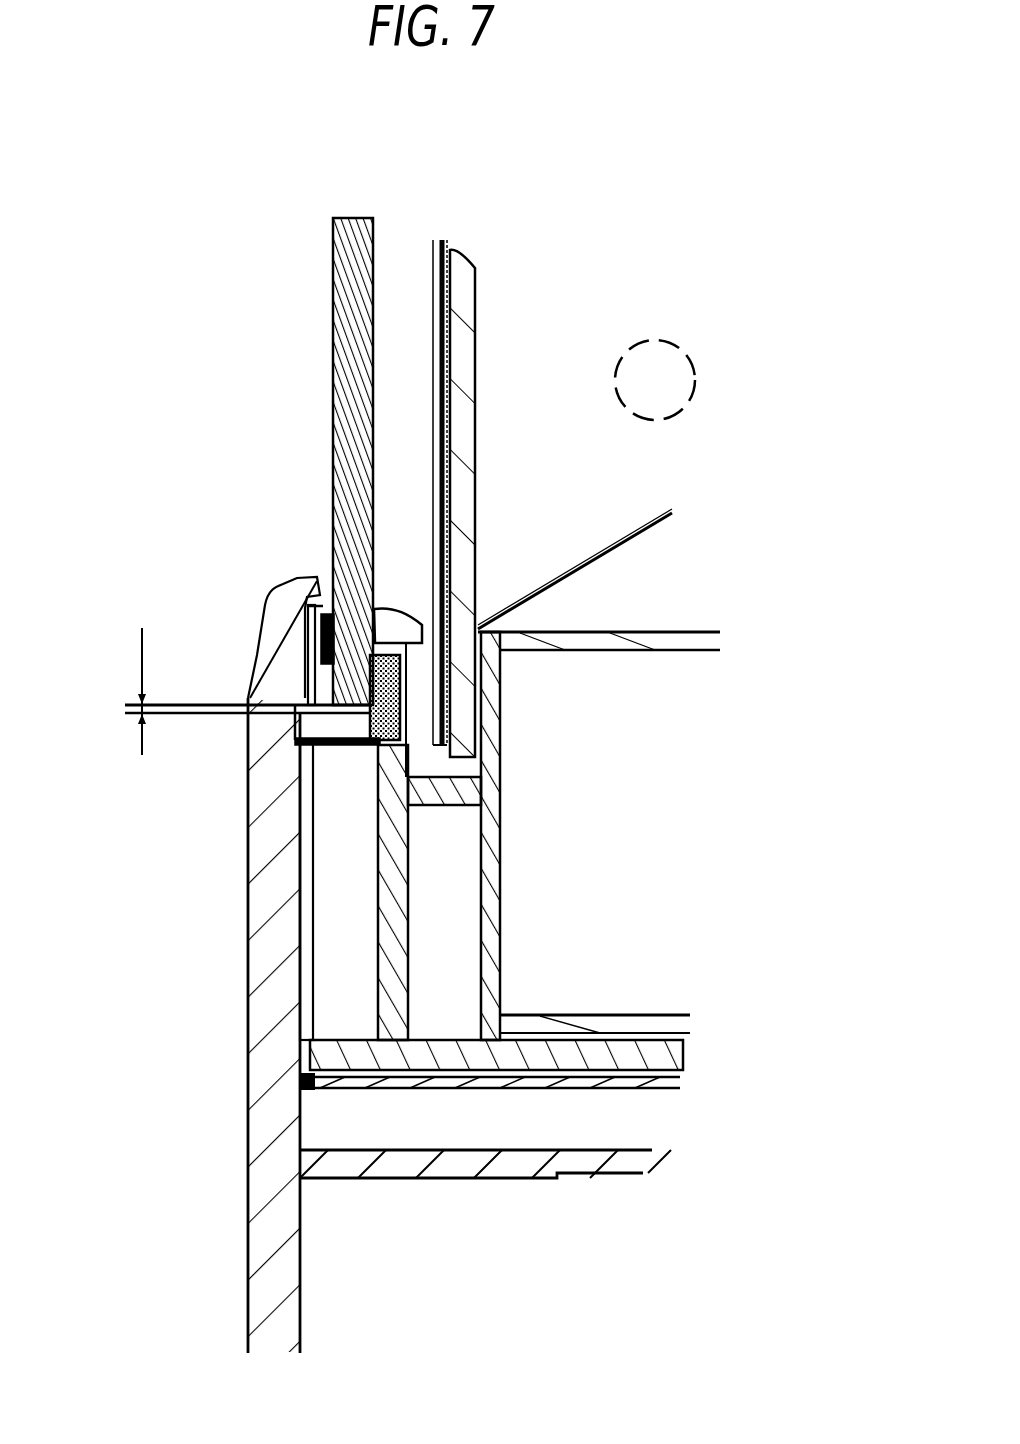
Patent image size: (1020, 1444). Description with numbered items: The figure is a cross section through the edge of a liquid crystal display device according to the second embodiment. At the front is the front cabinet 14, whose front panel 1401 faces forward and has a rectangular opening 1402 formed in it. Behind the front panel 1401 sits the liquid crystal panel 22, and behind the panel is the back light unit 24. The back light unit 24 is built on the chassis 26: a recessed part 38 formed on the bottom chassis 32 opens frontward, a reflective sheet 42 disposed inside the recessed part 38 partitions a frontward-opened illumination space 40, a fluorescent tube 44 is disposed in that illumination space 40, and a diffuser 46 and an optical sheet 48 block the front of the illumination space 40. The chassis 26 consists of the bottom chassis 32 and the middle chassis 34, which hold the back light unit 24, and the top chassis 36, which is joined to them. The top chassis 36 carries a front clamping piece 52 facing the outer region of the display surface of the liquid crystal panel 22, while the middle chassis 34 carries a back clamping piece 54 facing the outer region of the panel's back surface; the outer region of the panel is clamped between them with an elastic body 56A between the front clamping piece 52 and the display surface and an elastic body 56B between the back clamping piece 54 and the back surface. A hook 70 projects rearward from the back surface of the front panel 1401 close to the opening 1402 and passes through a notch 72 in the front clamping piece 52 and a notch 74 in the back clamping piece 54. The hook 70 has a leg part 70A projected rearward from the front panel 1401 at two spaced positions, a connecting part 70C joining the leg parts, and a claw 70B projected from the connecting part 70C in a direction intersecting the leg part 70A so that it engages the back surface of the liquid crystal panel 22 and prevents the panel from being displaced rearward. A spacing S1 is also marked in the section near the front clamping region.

The front cabinet 14 is at (236, 1101).
The liquid crystal panel 22 is at (333, 300).
The back light unit 24 is at (409, 256).
The chassis 26 is at (641, 1100).
The bottom chassis 32 is at (690, 1015).
The middle chassis 34 is at (680, 1087).
The top chassis 36 is at (325, 992).
The recessed part 38 is at (705, 632).
The illumination space 40 is at (636, 262).
The reflective sheet 42 is at (672, 512).
The fluorescent tube 44 is at (656, 342).
The diffuser 46 is at (477, 300).
The optical sheet 48 is at (433, 262).
The front clamping piece 52 is at (302, 802).
The back clamping piece 54 is at (393, 607).
The elastic body 56A is at (322, 642).
The elastic body 56B is at (401, 662).
The hook 70 is at (430, 792).
The leg part 70A is at (376, 750).
The claw 70B is at (401, 692).
The connecting part 70C is at (401, 692).
The notch 72 is at (316, 712).
The notch 74 is at (330, 748).
The front panel 1401 is at (246, 1197).
The rectangular opening 1402 is at (307, 576).
The gap dimension S1 is at (239, 691).